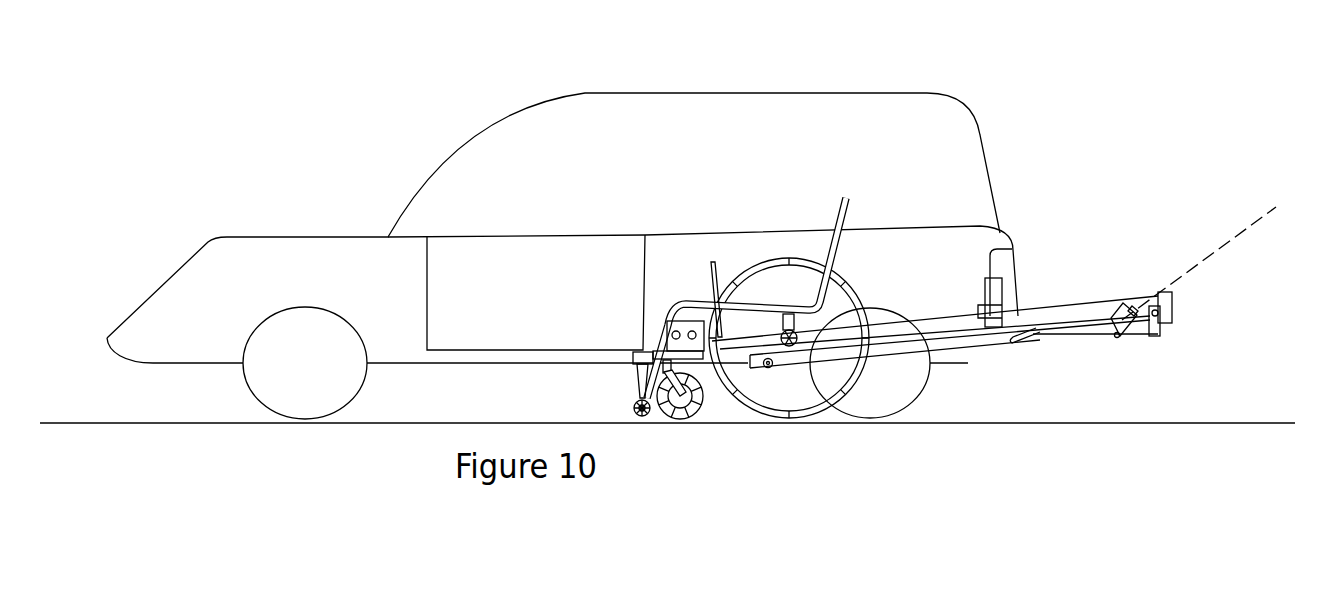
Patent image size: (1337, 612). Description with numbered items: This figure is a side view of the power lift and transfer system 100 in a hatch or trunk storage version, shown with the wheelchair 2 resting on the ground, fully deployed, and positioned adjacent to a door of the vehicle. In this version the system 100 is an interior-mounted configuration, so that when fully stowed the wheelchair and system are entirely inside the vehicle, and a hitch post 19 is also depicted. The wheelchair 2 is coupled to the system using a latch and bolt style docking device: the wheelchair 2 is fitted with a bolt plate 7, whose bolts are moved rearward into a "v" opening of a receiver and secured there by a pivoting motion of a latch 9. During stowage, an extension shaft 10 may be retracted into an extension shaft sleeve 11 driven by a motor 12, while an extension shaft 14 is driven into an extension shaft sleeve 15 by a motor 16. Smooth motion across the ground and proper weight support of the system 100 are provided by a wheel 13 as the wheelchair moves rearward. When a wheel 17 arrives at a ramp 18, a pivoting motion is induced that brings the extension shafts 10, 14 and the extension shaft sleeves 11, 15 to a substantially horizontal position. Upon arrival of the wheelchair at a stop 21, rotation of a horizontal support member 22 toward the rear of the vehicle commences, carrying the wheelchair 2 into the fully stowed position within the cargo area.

The system 100 is at (142, 180).
The wheelchair 2 is at (836, 232).
The bolt plate 7 is at (693, 325).
The latch 9 is at (713, 271).
The extension shaft 10 is at (719, 352).
The extension shaft sleeve 11 is at (902, 320).
The motor 12 is at (993, 286).
The wheel 13 is at (633, 408).
The extension shaft 14 is at (912, 340).
The extension shaft sleeve 15 is at (984, 340).
The motor 16 is at (1173, 313).
The wheel 17 is at (771, 368).
The ramp 18 is at (1015, 342).
The hitch post 19 is at (1003, 307).
The stop 21 is at (1211, 253).
The horizontal support member 22 is at (1146, 331).